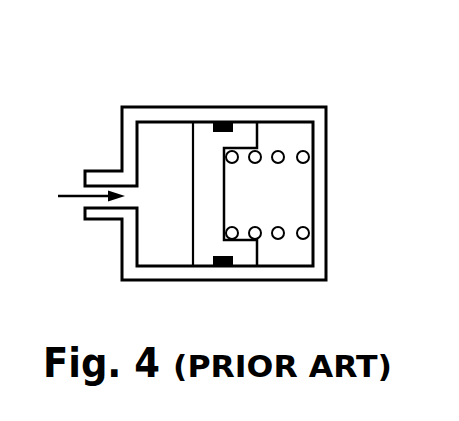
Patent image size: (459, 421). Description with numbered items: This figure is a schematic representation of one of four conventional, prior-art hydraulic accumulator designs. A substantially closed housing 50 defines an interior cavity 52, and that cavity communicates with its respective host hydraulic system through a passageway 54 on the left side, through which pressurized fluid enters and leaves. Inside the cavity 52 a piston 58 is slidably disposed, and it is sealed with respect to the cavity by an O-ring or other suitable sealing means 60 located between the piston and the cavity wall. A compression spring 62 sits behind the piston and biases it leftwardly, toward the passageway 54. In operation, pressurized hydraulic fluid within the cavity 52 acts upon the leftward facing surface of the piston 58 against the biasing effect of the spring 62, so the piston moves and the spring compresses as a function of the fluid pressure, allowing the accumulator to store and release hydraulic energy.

The housing 50 is at (327, 190).
The interior cavity 52 is at (163, 130).
The passageway 54 is at (95, 189).
The piston 58 is at (243, 133).
The sealing means 60 is at (230, 107).
The compression spring 62 is at (307, 233).